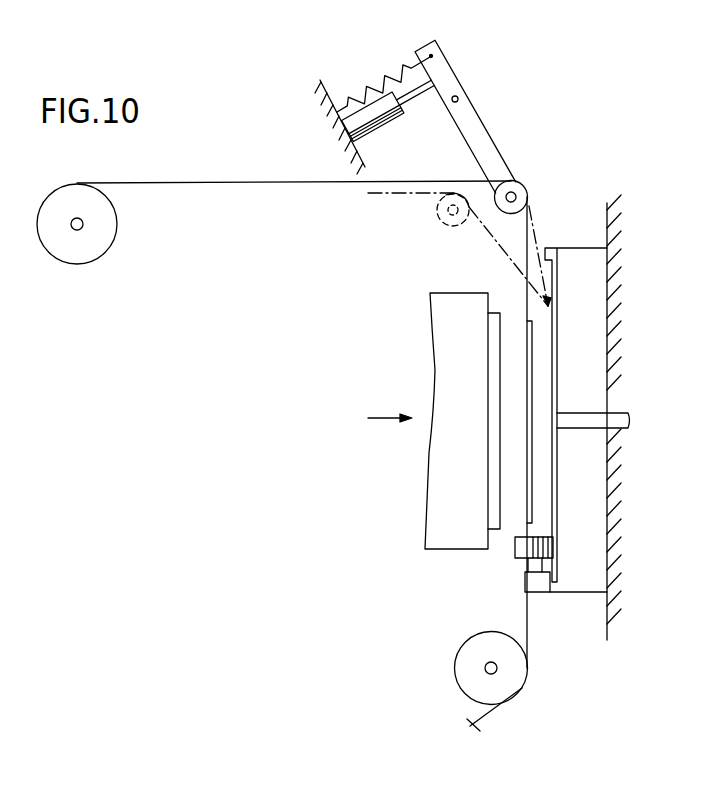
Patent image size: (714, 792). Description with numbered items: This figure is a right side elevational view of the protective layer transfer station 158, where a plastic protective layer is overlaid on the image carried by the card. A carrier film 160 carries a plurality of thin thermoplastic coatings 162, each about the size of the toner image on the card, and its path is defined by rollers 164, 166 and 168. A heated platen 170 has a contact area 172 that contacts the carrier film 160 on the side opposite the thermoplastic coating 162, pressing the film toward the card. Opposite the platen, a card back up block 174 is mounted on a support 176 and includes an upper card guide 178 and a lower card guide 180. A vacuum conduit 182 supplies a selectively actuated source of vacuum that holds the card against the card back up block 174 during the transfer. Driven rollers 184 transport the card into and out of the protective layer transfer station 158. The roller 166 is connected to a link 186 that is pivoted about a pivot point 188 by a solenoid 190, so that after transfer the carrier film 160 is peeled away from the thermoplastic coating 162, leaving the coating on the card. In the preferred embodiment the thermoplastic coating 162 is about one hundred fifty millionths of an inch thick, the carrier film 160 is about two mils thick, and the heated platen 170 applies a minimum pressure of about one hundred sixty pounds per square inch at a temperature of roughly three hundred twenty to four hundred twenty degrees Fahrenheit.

The protective layer transfer station 158 is at (387, 507).
The carrier film 160 is at (530, 627).
The thermoplastic coating 162 is at (532, 369).
The roller 164 is at (515, 690).
The roller 166 is at (528, 180).
The roller 168 is at (77, 257).
The heated platen 170 is at (451, 540).
The contact area 172 is at (502, 322).
The card back up block 174 is at (587, 262).
The support 176 is at (658, 287).
The upper card guide 178 is at (555, 245).
The lower card guide 180 is at (555, 587).
The vacuum conduit 182 is at (622, 418).
The driven rollers 184 is at (522, 552).
The link 186 is at (482, 137).
The pivot point 188 is at (458, 98).
The solenoid 190 is at (377, 125).